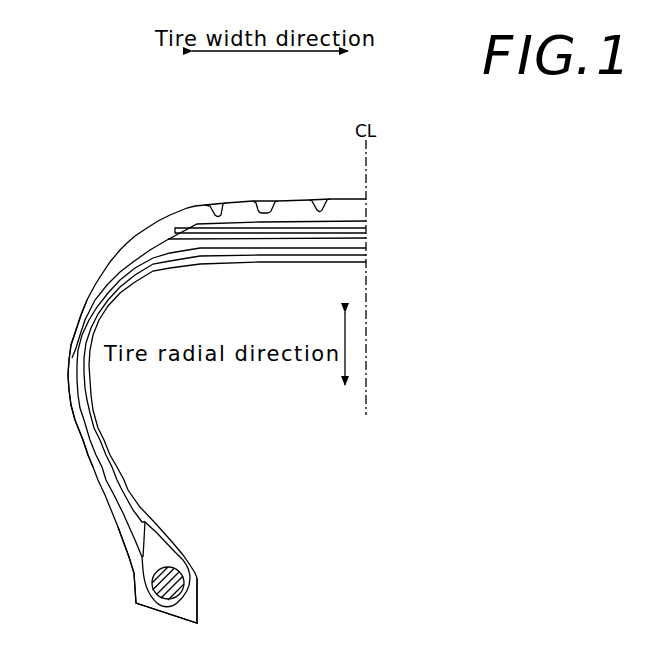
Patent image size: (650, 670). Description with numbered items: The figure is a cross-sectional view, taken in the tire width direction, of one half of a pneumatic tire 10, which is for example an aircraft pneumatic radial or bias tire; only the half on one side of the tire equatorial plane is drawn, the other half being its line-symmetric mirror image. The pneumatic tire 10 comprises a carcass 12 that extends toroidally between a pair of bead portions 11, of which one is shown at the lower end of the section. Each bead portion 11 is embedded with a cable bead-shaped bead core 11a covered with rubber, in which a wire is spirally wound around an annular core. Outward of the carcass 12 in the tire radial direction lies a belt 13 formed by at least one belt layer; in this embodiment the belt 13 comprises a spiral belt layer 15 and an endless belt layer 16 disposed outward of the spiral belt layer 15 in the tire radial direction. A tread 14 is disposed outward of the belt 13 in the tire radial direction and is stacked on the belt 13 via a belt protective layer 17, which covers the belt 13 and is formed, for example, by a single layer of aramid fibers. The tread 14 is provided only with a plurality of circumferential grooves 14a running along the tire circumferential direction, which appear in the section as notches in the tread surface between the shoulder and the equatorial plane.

The pneumatic tire 10 is at (143, 179).
The bead portion 11 is at (124, 574).
The bead core 11a is at (167, 568).
The carcass 12 is at (91, 303).
The belt 13 is at (90, 179).
The tread 14 is at (293, 205).
The circumferential groove 14a is at (217, 212).
The spiral belt layer 15 is at (138, 253).
The endless belt layer 16 is at (168, 235).
The belt protective layer 17 is at (192, 223).